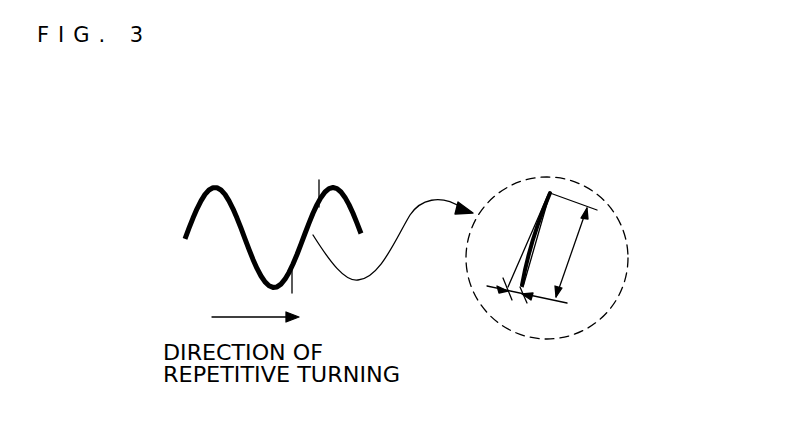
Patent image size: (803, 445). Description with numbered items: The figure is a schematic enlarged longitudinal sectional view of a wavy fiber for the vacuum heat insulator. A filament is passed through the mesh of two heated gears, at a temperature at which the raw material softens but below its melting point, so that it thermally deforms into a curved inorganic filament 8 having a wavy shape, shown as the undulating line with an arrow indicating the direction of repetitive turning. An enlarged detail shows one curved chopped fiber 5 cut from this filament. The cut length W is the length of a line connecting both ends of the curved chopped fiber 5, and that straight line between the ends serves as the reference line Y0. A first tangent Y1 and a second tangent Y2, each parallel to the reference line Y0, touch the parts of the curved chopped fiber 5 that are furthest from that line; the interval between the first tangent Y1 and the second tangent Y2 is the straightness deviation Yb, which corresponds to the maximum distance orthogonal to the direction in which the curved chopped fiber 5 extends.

The curved inorganic filament 8 is at (330, 183).
The curved chopped fiber 5 is at (541, 203).
The cut length W is at (577, 252).
The straightness deviation Yb is at (515, 307).
The reference line Y0 is at (524, 266).
The first tangent Y1 is at (527, 240).
The second tangent Y2 is at (530, 284).